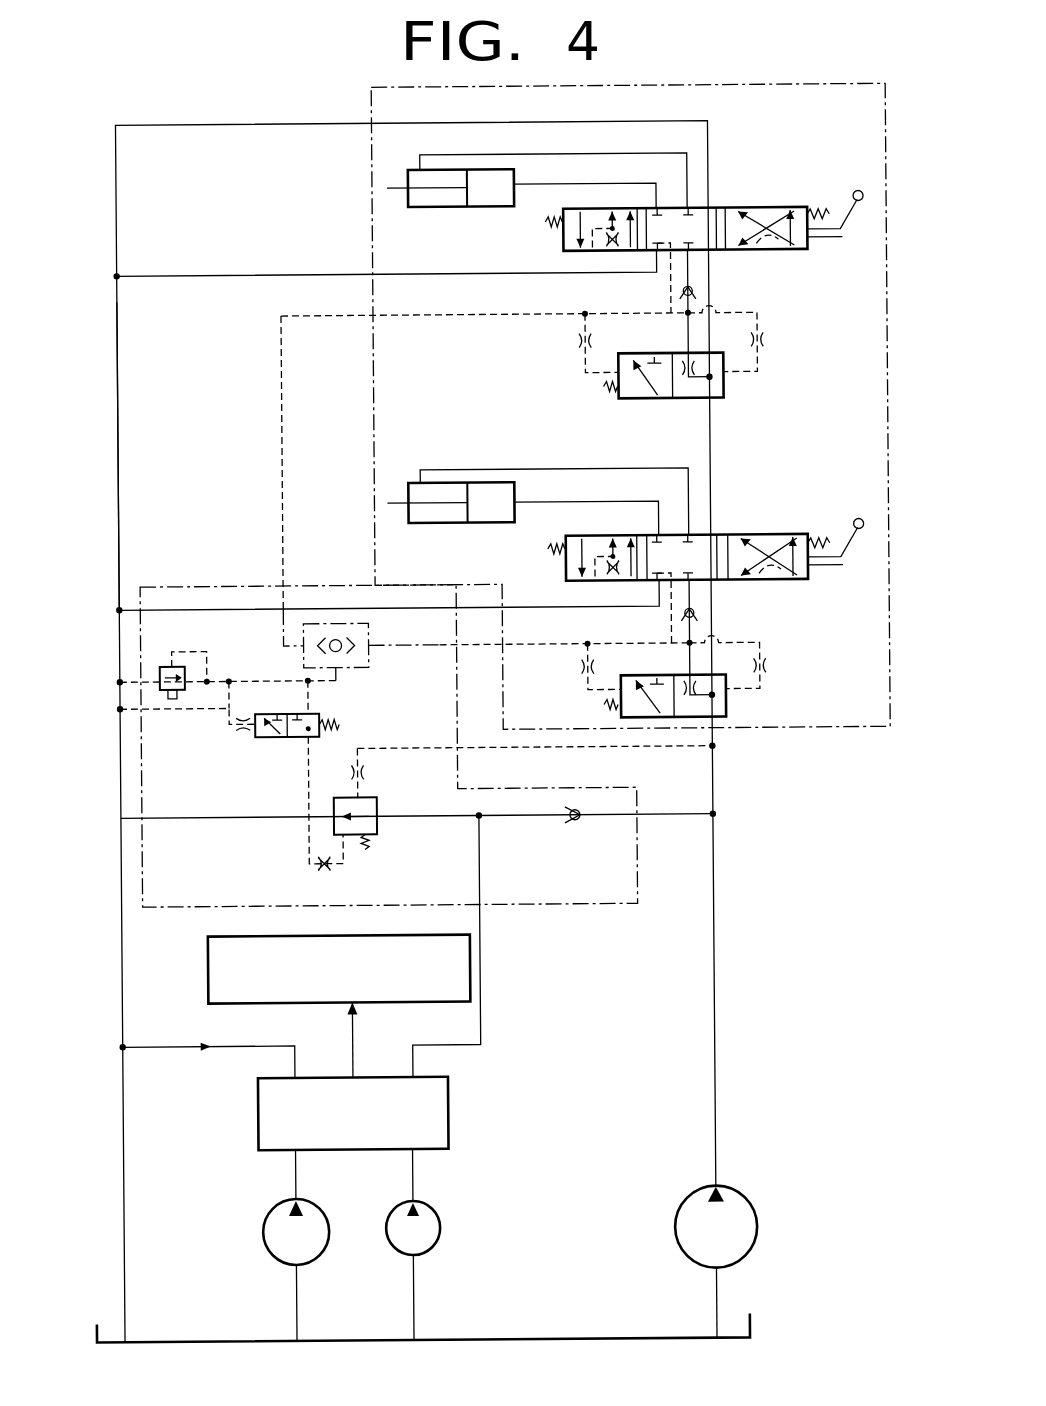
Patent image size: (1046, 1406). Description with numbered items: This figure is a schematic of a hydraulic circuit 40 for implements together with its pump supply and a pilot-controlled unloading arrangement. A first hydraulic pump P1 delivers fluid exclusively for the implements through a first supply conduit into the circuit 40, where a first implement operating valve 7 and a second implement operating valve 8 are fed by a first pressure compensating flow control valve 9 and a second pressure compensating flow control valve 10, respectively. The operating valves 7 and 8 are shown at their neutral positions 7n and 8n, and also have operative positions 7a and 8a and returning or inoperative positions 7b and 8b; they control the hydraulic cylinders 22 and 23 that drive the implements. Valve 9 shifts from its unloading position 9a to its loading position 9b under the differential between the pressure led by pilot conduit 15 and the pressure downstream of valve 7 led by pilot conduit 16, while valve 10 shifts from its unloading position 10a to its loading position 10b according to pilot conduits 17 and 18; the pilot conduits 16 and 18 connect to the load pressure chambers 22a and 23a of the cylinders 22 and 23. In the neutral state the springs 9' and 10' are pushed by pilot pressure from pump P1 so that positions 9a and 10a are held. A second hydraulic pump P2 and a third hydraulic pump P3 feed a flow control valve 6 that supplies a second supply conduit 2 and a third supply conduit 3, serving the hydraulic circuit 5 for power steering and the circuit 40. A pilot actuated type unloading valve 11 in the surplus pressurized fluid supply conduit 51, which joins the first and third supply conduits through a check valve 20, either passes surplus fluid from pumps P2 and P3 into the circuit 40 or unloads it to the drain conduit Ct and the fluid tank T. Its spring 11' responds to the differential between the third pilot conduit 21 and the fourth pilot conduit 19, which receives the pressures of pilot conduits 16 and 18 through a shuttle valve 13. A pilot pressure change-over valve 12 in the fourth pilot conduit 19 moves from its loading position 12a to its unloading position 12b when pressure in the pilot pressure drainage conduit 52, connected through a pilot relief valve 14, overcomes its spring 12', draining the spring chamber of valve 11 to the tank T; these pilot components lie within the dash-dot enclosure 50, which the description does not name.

The second supply conduit 2 is at (455, 1045).
The third supply conduit 3 is at (215, 1046).
The hydraulic circuit for power steering 5 is at (206, 950).
The flow control valve 6 is at (445, 1129).
The first implement operating valve 7 is at (787, 583).
The operative position 7a is at (773, 538).
The returning position 7b is at (570, 584).
The neutral position 7n is at (722, 538).
The second implement operating valve 8 is at (787, 253).
The operative position 8a is at (770, 211).
The returning position 8b is at (589, 213).
The neutral position 8n is at (722, 211).
The first pressure compensating flow control valve 9 is at (707, 699).
The spring 9' is at (579, 703).
The unloading position 9a is at (728, 719).
The loading position 9b is at (645, 721).
The second pressure compensating flow control valve 10 is at (716, 382).
The spring 10' is at (576, 373).
The unloading position 10a is at (686, 402).
The loading position 10b is at (621, 402).
The pilot actuated type unloading valve 11 is at (382, 831).
The spring 11' is at (385, 867).
The pilot pressure change-over valve 12 is at (281, 753).
The spring 12' is at (358, 725).
The loading position 12a is at (320, 713).
The unloading position 12b is at (255, 736).
The shuttle valve 13 is at (366, 623).
The pilot relief valve 14 is at (170, 663).
The pilot conduit 15 is at (762, 650).
The first pilot conduit 16 is at (620, 645).
The pilot conduit 17 is at (761, 325).
The second pilot conduit 18 is at (615, 315).
The fourth pilot conduit 19 is at (300, 846).
The check valve 20 is at (575, 822).
The third pilot conduit 21 is at (545, 750).
The hydraulic cylinder 22 is at (470, 523).
The load pressure chamber 22a is at (517, 485).
The hydraulic cylinder 23 is at (432, 208).
The load pressure chamber 23a is at (490, 207).
The hydraulic circuit for implements 40 is at (832, 731).
The pilot control circuit 50 is at (252, 559).
The surplus pressurized fluid supply conduit 51 is at (425, 816).
The pilot pressure drainage conduit 52 is at (235, 709).
The drain conduit Ct is at (120, 498).
The first hydraulic pump P1 is at (746, 1252).
The second hydraulic pump P2 is at (319, 1250).
The third hydraulic pump P3 is at (427, 1250).
The fluid tank T is at (746, 1338).